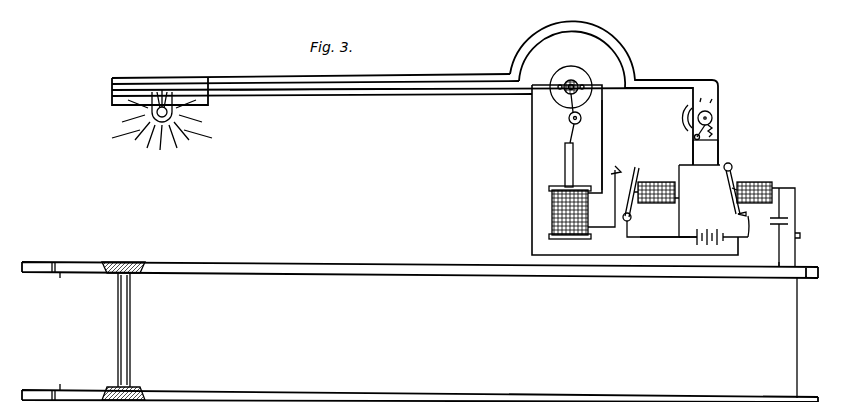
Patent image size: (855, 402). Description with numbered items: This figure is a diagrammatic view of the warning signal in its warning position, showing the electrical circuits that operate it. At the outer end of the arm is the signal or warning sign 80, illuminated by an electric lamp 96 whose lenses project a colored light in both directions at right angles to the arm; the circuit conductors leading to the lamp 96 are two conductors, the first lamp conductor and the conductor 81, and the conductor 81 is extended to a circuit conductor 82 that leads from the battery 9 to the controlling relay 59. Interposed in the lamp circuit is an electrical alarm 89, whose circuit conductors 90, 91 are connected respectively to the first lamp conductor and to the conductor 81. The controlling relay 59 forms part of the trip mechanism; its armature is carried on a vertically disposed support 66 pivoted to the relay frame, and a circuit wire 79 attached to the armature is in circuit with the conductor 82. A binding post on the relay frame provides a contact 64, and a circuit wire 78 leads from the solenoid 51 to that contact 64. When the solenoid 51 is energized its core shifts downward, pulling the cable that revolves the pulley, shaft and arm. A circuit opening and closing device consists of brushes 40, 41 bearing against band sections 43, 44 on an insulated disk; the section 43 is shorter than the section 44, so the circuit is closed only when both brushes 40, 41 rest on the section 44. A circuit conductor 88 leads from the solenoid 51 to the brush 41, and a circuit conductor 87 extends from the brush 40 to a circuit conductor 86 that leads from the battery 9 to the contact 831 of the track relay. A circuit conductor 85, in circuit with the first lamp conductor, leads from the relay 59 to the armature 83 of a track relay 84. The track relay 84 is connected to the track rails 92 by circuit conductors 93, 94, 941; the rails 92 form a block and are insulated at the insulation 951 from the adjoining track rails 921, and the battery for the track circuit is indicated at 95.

The signal or warning sign 80 is at (287, 77).
The circuit conductor 81 is at (288, 90).
The electric lamp 96 is at (161, 128).
The circuit conductor 87 is at (532, 158).
The circuit conductor 88 is at (603, 141).
The brush or resilient contact arm 41 is at (583, 84).
The band section 43 is at (575, 80).
The brush or resilient contact arm 40 is at (564, 82).
The band section 44 is at (566, 103).
The solenoid 51 is at (562, 210).
The circuit wire 78 is at (615, 211).
The contact 64 is at (609, 188).
The support 66 is at (641, 170).
The controlling relay 59 is at (657, 182).
The circuit conductor 82 is at (679, 215).
The circuit wire 79 is at (660, 238).
The circuit conductor 85 is at (706, 166).
The battery 9 is at (711, 229).
The armature 83 is at (733, 172).
The contact 831 is at (746, 214).
The circuit conductor 86 is at (751, 232).
The track relay 84 is at (766, 182).
The circuit conductor 94 is at (784, 227).
The track circuit battery 95 is at (800, 236).
The electrical alarm 89 is at (713, 118).
The circuit conductor 90 is at (694, 137).
The circuit conductor 91 is at (719, 141).
The track rails 92 is at (482, 271).
The track rails 921 is at (34, 273).
The insulation 951 is at (58, 273).
The circuit conductor 93 is at (798, 319).
The circuit conductor 941 is at (780, 263).